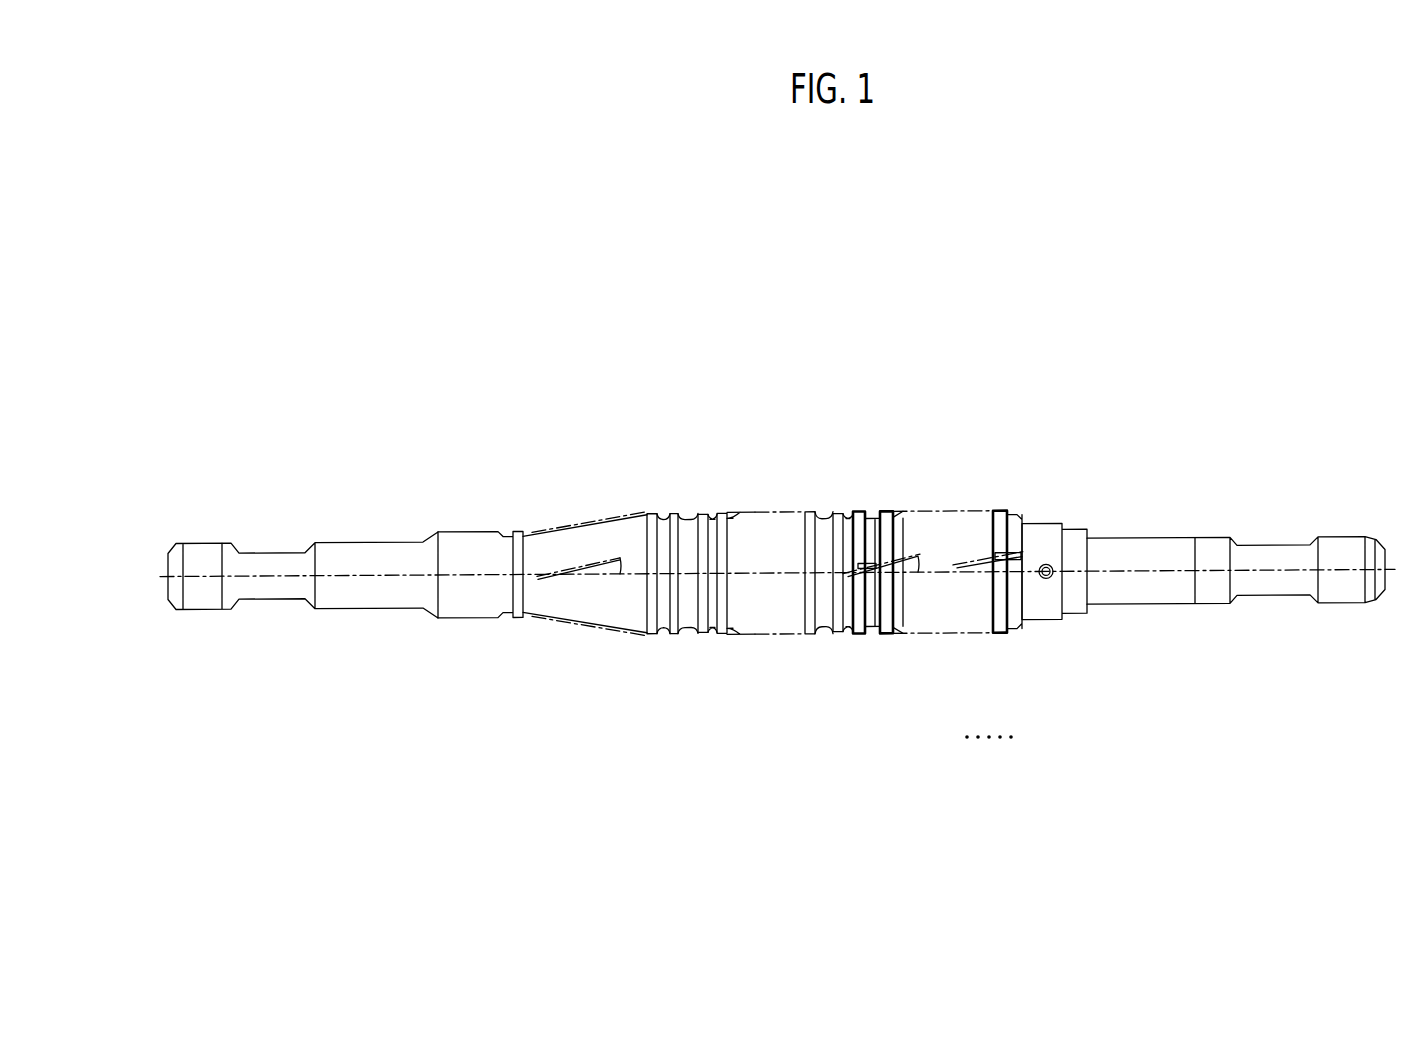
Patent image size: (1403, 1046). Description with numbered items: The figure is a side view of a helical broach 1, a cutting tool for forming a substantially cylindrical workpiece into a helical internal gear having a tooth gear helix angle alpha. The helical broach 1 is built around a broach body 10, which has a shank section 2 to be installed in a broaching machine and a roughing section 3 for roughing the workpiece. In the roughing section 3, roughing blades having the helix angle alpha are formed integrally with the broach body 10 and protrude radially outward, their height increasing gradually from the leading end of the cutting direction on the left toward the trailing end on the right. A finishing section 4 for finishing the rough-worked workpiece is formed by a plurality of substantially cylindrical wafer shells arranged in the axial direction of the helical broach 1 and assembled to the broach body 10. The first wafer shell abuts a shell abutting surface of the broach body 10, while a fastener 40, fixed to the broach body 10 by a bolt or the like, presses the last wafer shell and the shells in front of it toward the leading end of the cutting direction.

The helical broach 1 is at (1255, 315).
The broach body 10 is at (1230, 388).
The shank section 2 is at (340, 510).
The roughing section 3 is at (598, 495).
The finishing section 4 is at (837, 768).
The fastener 40 is at (1063, 598).